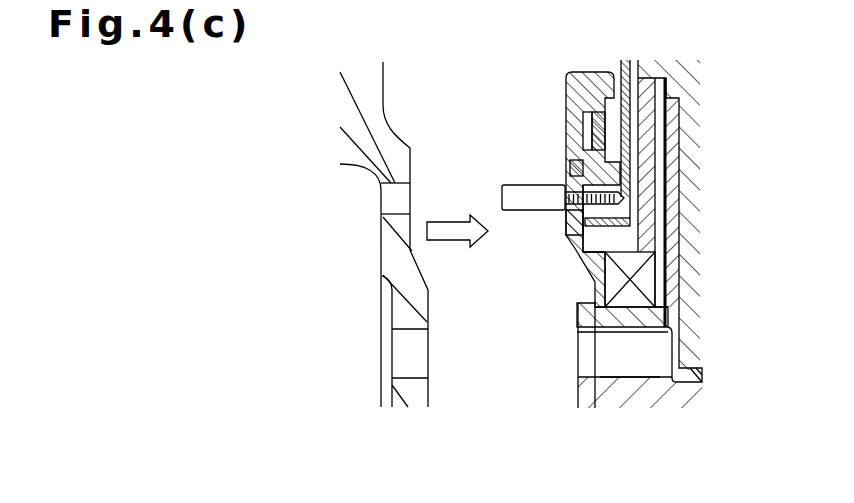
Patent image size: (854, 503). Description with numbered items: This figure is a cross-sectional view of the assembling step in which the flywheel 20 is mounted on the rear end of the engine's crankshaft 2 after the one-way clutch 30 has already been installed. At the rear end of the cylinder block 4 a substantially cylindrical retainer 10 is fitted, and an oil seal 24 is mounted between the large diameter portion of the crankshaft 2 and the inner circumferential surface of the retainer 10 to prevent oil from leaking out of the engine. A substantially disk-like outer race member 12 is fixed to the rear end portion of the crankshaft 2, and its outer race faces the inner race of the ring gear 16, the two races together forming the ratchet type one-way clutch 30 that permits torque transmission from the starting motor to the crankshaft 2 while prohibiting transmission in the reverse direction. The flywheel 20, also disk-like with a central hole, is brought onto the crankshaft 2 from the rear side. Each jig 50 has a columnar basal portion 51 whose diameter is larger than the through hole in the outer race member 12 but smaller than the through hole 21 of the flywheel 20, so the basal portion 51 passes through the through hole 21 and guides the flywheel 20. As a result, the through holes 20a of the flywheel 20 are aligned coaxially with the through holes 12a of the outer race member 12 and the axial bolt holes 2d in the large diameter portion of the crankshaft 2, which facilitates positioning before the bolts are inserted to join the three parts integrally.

The crankshaft 2 is at (683, 403).
The bolt holes 2d is at (641, 408).
The cylinder block 4 is at (680, 70).
The retainer 10 is at (652, 155).
The outer race member 12 is at (578, 285).
The through holes 12a is at (578, 407).
The ring gear 16 is at (636, 97).
The flywheel 20 is at (384, 86).
The through holes 20a is at (407, 375).
The through holes 21 is at (383, 205).
The oil seal 24 is at (650, 275).
The one-way clutch 30 is at (545, 90).
The jig 50 is at (530, 241).
The basal portion 51 is at (521, 212).